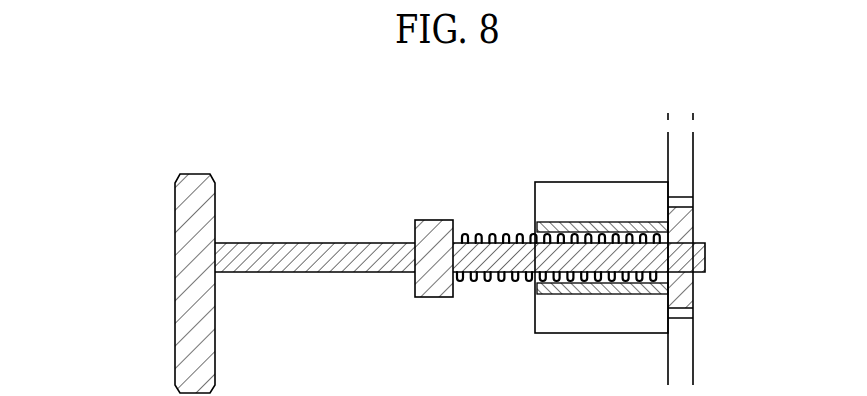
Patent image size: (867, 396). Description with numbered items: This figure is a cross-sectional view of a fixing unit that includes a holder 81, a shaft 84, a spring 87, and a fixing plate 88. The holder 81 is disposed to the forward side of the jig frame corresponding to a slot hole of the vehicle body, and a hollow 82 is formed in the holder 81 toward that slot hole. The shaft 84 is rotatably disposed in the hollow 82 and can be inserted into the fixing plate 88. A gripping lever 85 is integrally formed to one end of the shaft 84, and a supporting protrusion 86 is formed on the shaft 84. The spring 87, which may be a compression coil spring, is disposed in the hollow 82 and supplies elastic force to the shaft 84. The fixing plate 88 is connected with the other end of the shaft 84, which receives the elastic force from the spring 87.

The holder 81 is at (568, 182).
The hollow 82 is at (603, 222).
The shaft 84 is at (311, 272).
The gripping lever 85 is at (175, 272).
The supporting protrusion 86 is at (433, 220).
The spring 87 is at (498, 283).
The fixing plate 88 is at (695, 223).